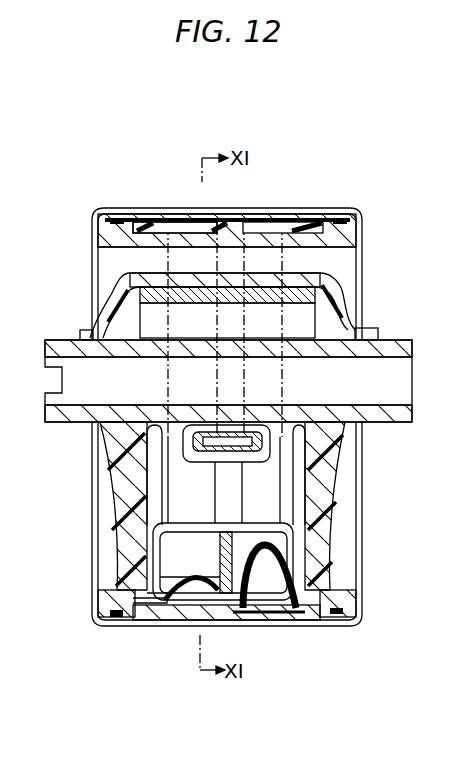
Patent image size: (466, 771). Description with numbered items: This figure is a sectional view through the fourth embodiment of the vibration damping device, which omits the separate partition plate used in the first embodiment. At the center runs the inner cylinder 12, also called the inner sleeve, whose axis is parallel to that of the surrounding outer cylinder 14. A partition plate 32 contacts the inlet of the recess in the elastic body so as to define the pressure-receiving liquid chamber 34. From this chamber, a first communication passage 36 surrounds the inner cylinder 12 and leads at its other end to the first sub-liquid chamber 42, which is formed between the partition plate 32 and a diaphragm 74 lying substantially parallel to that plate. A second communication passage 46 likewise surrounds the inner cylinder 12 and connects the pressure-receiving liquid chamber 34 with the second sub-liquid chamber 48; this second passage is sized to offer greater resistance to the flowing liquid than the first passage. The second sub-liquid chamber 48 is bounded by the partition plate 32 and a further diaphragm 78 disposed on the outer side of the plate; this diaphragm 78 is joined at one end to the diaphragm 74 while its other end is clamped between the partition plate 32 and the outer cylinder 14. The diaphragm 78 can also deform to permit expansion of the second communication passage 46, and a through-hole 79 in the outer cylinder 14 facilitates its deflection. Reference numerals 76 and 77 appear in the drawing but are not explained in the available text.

The inner cylinder 12 is at (393, 350).
The outer cylinder 14 is at (314, 217).
The partition plate 32 is at (190, 524).
The pressure-receiving liquid chamber 34 is at (268, 505).
The first communication passage 36 is at (193, 228).
The first sub-liquid chamber 42 is at (200, 563).
The second communication passage 46 is at (258, 228).
The second sub-liquid chamber 48 is at (292, 541).
The diaphragm 74 is at (166, 627).
The retainer 76 is at (190, 627).
The spring plate 77 is at (181, 627).
The diaphragm 78 is at (297, 628).
The through-hole 79 is at (260, 628).